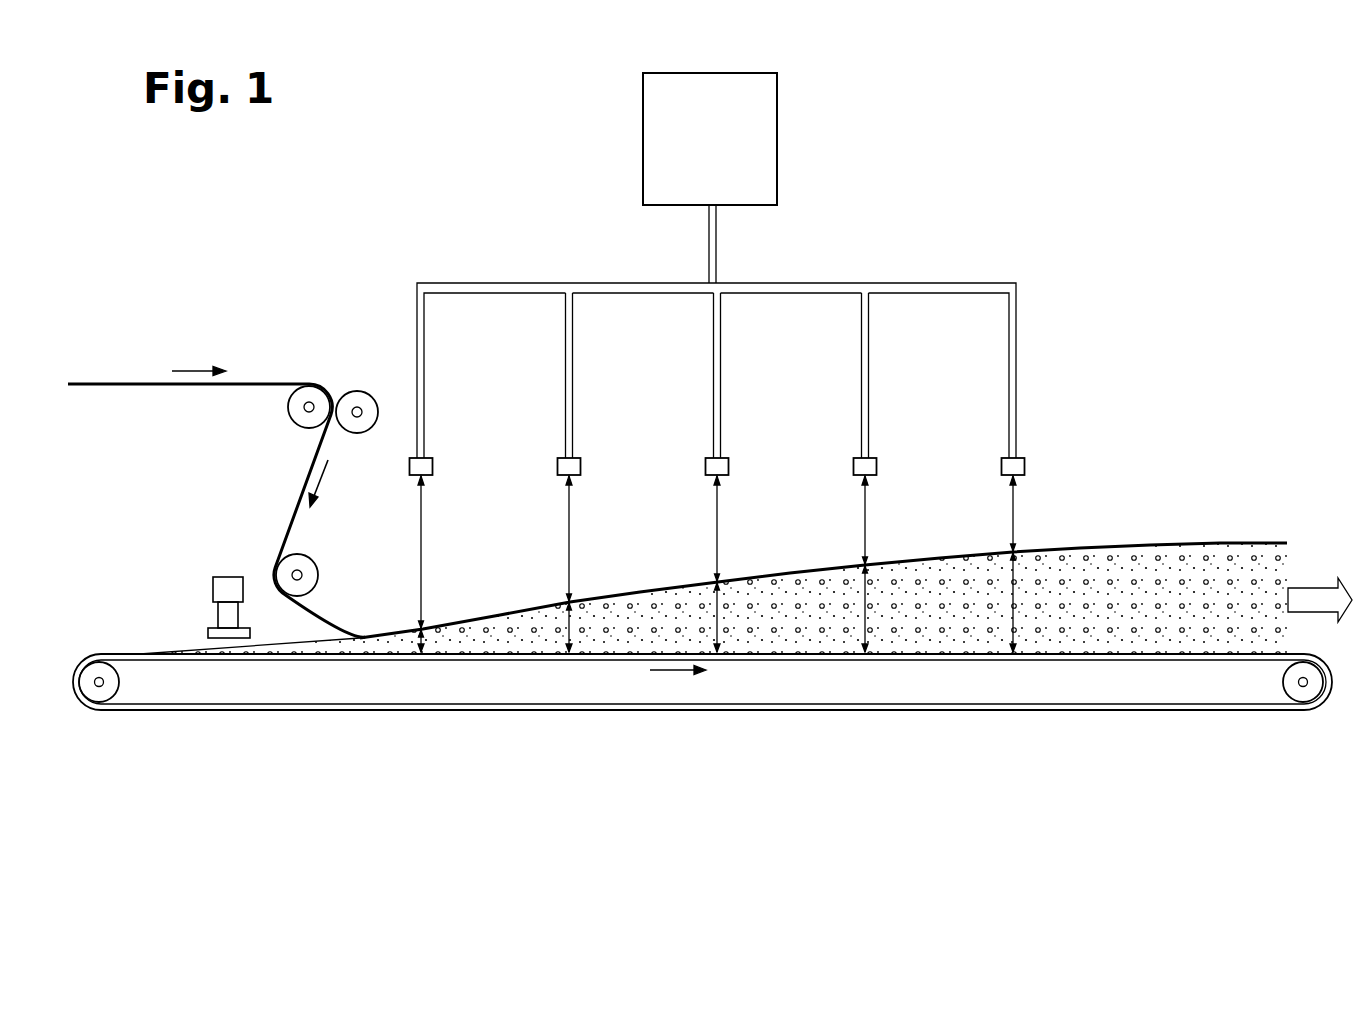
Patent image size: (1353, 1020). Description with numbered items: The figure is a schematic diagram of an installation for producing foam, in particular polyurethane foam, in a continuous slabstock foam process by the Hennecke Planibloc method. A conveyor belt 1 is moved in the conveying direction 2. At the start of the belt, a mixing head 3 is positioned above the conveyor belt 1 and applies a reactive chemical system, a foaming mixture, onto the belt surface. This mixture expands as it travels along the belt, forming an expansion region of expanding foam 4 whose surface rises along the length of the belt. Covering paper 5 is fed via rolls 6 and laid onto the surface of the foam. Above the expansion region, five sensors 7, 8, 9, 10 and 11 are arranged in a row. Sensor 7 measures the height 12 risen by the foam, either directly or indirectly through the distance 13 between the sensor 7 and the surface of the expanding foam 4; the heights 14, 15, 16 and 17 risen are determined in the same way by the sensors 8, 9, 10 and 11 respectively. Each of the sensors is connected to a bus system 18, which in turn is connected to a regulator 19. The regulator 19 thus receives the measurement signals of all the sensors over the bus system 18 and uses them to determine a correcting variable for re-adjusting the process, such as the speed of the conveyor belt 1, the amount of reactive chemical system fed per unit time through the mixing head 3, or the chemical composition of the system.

The conveyor belt 1 is at (353, 707).
The conveying direction 2 is at (660, 671).
The mixing head 3 is at (213, 588).
The expanding foam 4 is at (1150, 575).
The covering paper 5 is at (1230, 543).
The rolls 6 is at (365, 402).
The sensor 7 is at (432, 467).
The sensor 8 is at (580, 467).
The sensor 9 is at (728, 467).
The sensor 10 is at (876, 467).
The sensor 11 is at (1024, 467).
The height risen 12 is at (425, 642).
The distance 13 is at (423, 563).
The height risen 14 is at (572, 632).
The height risen 15 is at (720, 627).
The height risen 16 is at (868, 613).
The height risen 17 is at (1016, 612).
The bus system 18 is at (930, 290).
The regulator 19 is at (777, 153).